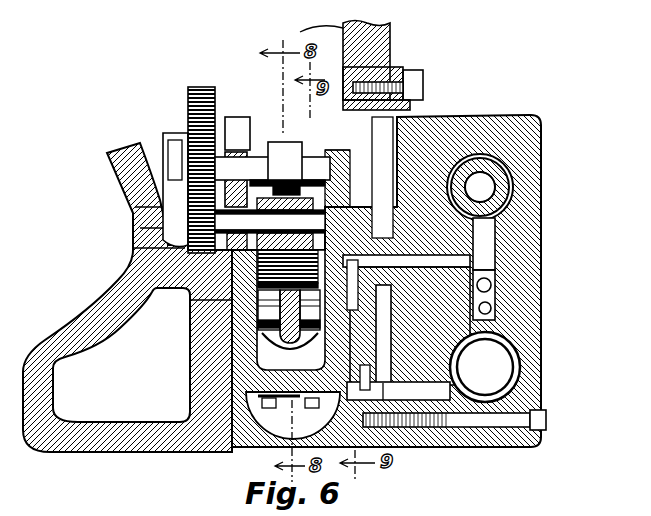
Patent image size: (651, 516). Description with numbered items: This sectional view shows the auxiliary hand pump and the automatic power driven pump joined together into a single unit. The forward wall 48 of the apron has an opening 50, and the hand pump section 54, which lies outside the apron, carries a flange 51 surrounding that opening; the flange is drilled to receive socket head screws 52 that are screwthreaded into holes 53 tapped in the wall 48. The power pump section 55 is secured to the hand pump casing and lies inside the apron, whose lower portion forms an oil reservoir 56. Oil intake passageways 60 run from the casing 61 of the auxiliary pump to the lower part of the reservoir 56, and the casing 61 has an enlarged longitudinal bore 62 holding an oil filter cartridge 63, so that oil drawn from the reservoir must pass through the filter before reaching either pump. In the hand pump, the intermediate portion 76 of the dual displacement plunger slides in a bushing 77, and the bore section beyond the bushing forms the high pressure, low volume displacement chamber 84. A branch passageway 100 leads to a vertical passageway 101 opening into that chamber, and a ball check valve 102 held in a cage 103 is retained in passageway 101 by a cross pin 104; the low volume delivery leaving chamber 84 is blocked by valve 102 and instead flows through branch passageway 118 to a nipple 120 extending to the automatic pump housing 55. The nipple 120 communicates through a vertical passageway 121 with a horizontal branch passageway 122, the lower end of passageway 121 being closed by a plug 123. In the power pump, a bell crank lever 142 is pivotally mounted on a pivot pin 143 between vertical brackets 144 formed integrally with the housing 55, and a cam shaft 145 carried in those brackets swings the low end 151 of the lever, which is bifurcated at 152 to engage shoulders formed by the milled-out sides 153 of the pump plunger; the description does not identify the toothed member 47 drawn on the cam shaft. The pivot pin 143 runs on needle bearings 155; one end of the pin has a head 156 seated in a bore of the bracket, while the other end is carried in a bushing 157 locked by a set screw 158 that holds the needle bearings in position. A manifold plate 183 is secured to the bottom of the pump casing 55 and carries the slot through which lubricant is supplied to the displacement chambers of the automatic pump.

The gear 47 is at (189, 110).
The forward wall 48 is at (392, 50).
The opening 50 is at (395, 118).
The flange 51 is at (425, 78).
The socket head screws 52 is at (548, 418).
The holes 53 is at (347, 45).
The hand pump section 54 is at (556, 290).
The power pump section 55 is at (240, 352).
The oil reservoir 56 is at (398, 400).
The oil intake passageways 60 is at (445, 400).
The casing 61 is at (537, 385).
The longitudinal bore 62 is at (527, 357).
The oil filter cartridge 63 is at (540, 408).
The intermediate portion of the pump plunger 76 is at (505, 186).
The bushing 77 is at (507, 165).
The high pressure, low volume displacement chamber 84 is at (515, 193).
The branch passageway 100 is at (505, 310).
The vertical passageway 101 is at (495, 230).
The ball check valve 102 is at (540, 258).
The cage 103 is at (492, 284).
The cross pin 104 is at (520, 245).
The branch passageway 118 is at (440, 250).
The nipple 120 is at (415, 268).
The vertical passageway 121 is at (383, 333).
The horizontal branch passageway 122 is at (328, 347).
The plug 123 is at (383, 400).
The bell crank lever 142 is at (253, 280).
The pivot pin 143 is at (245, 262).
The vertical brackets 144 is at (235, 130).
The cam shaft 145 is at (220, 100).
The low end of the bell crank 151 is at (250, 315).
The bifurcation 152 is at (157, 350).
The milled-out sides 153 is at (250, 415).
The needle bearings 155 is at (180, 248).
The head 156 is at (353, 220).
The bushing 157 is at (187, 220).
The set screw 158 is at (180, 213).
The manifold plate 183 is at (283, 410).